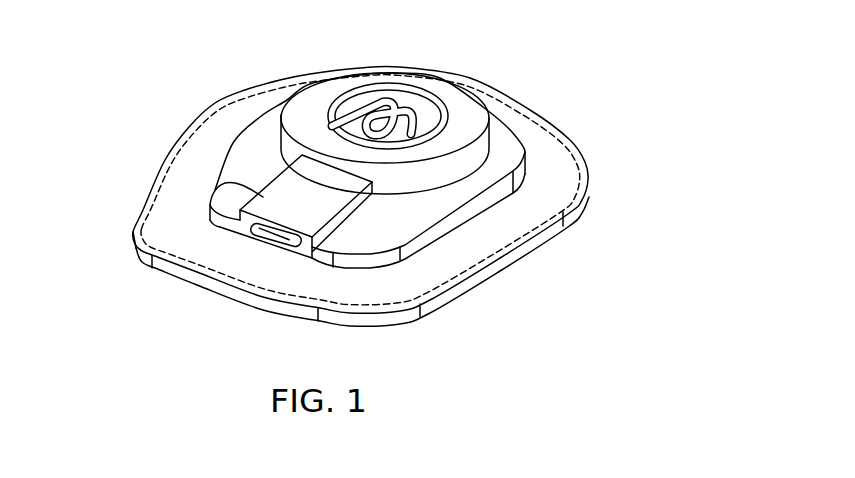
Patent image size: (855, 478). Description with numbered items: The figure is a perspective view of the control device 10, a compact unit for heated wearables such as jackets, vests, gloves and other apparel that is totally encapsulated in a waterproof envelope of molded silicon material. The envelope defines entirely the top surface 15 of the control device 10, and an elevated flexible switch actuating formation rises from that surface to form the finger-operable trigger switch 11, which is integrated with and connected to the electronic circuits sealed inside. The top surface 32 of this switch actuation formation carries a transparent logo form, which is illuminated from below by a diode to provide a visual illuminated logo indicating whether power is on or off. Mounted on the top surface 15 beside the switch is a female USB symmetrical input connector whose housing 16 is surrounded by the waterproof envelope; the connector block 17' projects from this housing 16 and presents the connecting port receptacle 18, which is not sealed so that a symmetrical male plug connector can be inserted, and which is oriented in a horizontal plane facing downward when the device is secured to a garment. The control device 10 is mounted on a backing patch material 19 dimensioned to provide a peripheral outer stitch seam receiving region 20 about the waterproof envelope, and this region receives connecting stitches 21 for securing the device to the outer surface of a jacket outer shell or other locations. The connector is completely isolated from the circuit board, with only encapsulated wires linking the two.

The control device 10 is at (573, 92).
The finger-operable trigger switch 11 is at (368, 82).
The top surface of the switch actuation formation 32 is at (315, 97).
The top surface 15 is at (500, 158).
The housing 16 is at (213, 185).
The connector block 17' is at (247, 171).
The connecting port receptacle 18 is at (283, 238).
The backing patch material 19 is at (169, 220).
The peripheral outer stitch seam receiving region 20 is at (425, 274).
The connecting stitches 21 is at (587, 217).